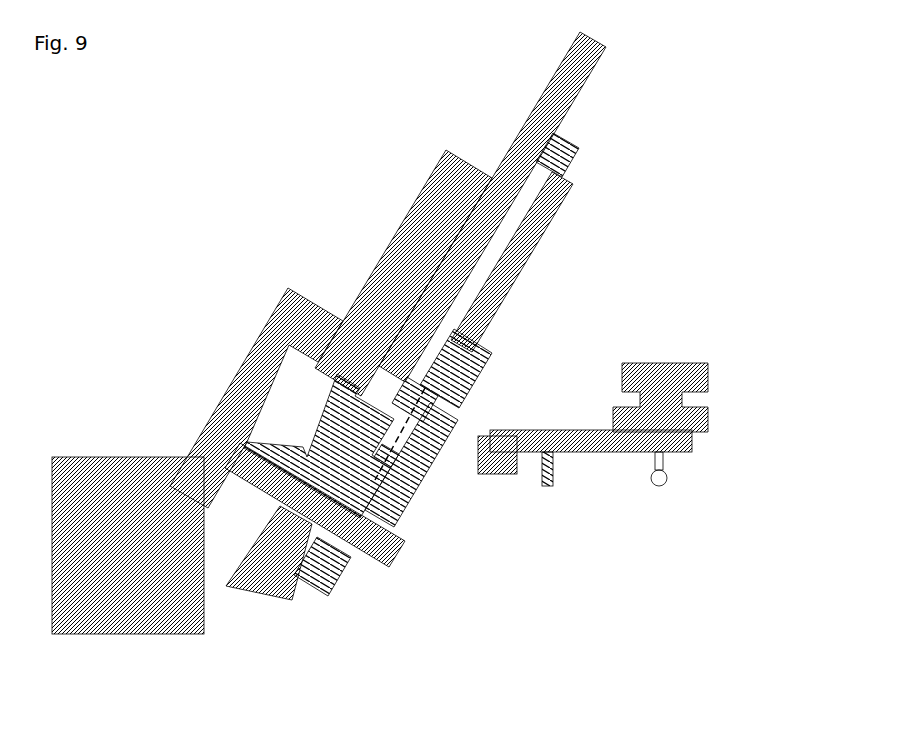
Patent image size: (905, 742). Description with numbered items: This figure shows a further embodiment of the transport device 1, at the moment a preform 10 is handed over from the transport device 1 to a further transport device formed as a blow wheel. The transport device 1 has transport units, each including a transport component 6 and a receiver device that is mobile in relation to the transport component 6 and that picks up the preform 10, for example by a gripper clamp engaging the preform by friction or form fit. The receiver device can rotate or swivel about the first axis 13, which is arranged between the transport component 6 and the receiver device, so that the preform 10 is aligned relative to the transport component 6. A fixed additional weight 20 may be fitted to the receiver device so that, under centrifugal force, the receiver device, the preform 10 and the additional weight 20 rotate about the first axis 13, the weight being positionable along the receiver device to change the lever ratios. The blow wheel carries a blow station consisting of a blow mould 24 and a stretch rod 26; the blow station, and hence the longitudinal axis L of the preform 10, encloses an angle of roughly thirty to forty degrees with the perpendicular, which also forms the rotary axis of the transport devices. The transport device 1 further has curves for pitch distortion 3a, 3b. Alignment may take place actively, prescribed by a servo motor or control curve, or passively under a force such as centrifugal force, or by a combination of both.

The transport device 1 is at (240, 163).
The fixed additional weight 20 is at (108, 484).
The stretch rod 26 is at (548, 203).
The preform 10 is at (428, 405).
The first axis 13 is at (484, 458).
The transport component 6 is at (515, 478).
The curve for pitch distortion 3a is at (552, 477).
The curve for pitch distortion 3b is at (666, 474).
The longitudinal axis L is at (388, 452).
The blow mould 24 is at (399, 532).